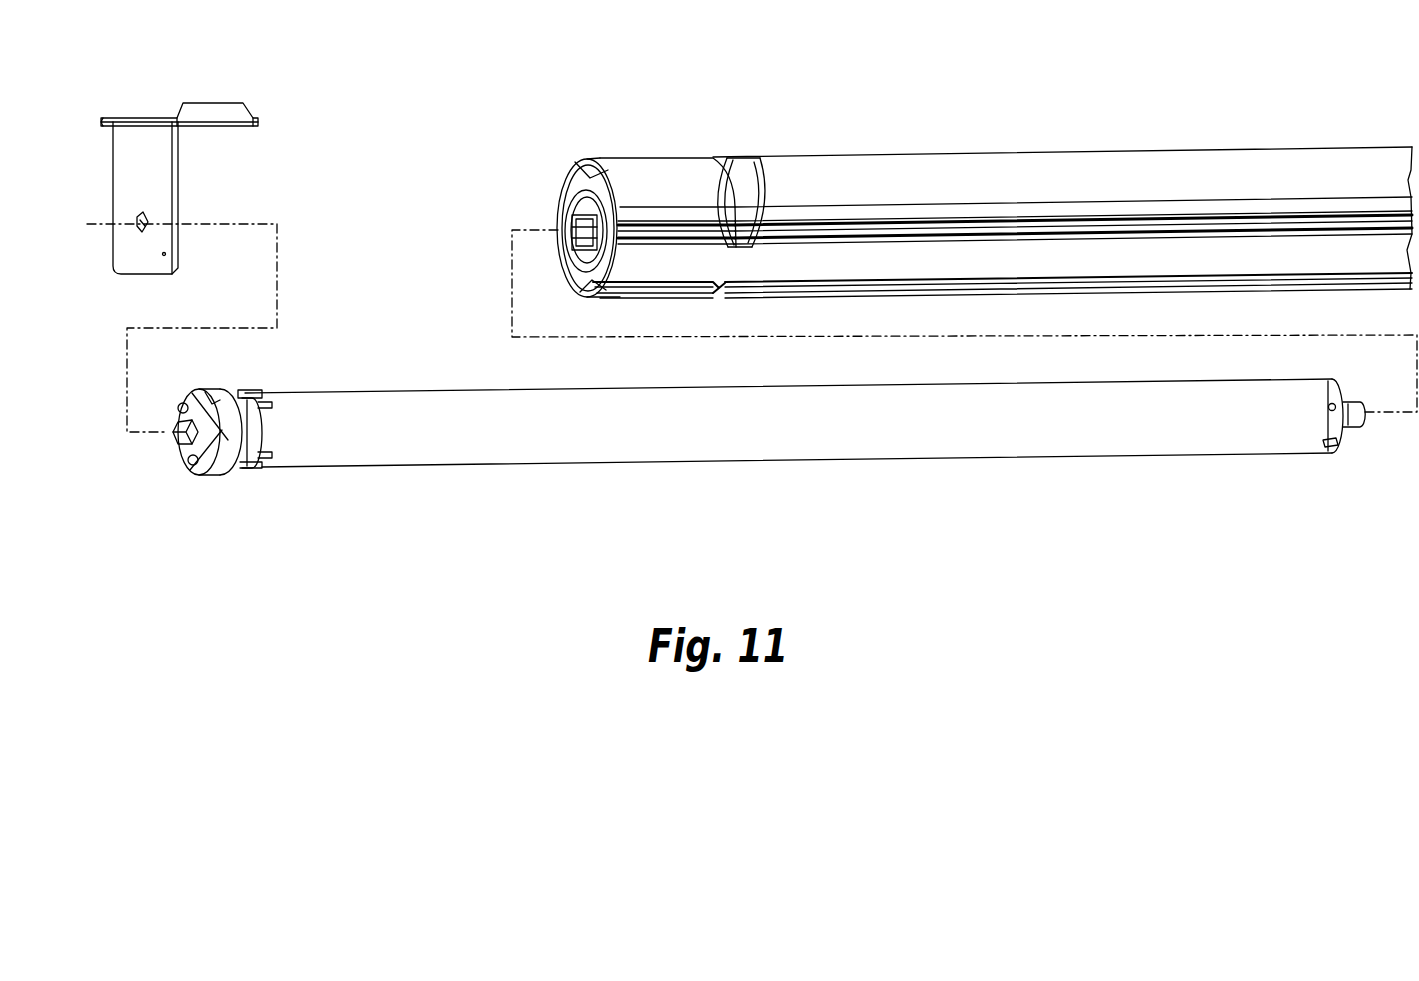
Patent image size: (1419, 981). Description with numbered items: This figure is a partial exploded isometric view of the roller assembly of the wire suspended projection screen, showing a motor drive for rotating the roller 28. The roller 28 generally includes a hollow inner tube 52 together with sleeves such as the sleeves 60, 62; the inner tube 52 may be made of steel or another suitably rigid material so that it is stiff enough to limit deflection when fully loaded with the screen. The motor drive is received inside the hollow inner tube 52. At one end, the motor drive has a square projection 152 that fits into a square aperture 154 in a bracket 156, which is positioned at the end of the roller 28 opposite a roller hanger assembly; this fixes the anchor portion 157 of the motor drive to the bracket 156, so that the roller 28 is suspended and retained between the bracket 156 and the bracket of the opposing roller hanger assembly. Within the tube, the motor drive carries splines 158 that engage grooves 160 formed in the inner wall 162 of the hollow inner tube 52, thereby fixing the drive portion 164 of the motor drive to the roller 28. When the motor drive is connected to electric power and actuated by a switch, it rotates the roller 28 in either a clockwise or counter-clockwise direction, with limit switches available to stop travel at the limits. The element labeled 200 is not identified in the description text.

The roller 28 is at (587, 143).
The hollow inner tube 52 is at (678, 257).
The sleeve 60 is at (927, 173).
The sleeve 62 is at (642, 180).
The square projection 152 is at (178, 438).
The square aperture 154 is at (132, 232).
The bracket 156 is at (253, 120).
The anchor portion 157 is at (198, 460).
The splines 158 is at (245, 393).
The grooves 160 is at (570, 200).
The inner wall 162 is at (571, 223).
The drive portion 164 is at (245, 448).
The motor tube 200 is at (398, 425).